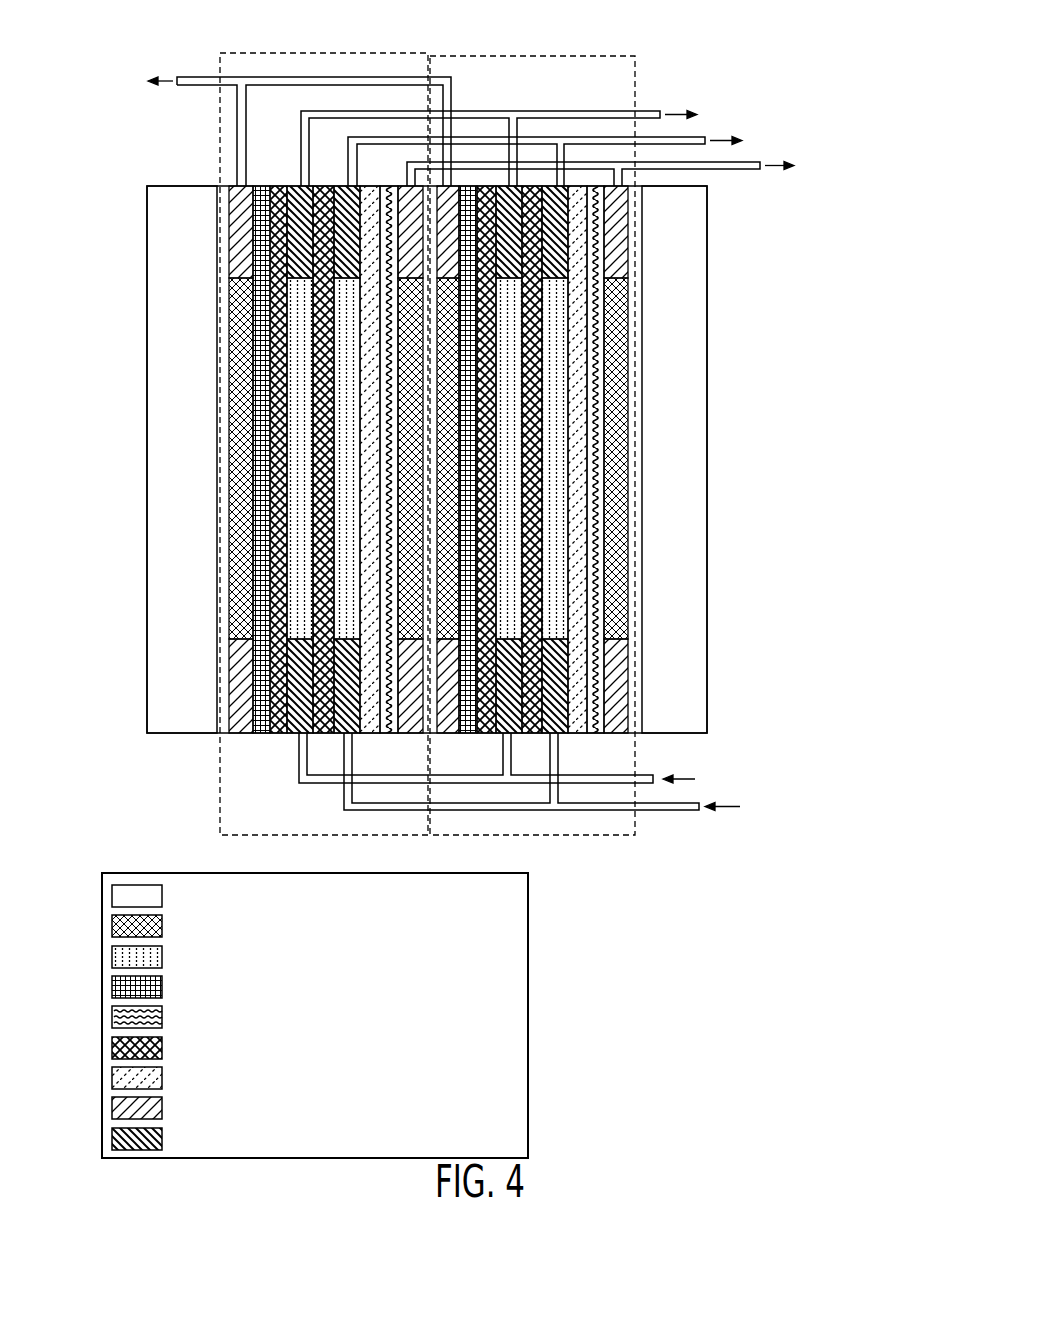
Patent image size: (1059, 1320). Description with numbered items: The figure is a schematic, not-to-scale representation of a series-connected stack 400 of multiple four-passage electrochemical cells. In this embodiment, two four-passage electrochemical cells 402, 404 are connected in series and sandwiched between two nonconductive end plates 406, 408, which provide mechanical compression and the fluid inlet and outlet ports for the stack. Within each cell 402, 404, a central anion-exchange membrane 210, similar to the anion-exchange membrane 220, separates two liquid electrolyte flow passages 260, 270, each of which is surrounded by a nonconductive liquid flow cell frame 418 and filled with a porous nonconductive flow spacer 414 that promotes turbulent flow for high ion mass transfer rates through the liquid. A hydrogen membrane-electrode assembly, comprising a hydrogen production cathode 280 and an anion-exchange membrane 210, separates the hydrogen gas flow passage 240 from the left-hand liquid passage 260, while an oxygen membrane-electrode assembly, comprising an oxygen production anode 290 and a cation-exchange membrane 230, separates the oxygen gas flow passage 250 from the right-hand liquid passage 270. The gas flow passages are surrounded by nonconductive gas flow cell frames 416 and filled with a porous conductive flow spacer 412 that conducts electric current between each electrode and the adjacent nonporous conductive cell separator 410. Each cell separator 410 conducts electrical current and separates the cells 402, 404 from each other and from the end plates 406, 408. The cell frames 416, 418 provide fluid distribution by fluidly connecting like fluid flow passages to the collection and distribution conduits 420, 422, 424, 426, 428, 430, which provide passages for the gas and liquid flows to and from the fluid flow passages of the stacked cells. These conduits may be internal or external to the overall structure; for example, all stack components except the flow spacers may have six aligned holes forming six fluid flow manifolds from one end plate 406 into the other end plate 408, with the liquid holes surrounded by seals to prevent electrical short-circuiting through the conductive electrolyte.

The electrochemical cell stack 400 is at (115, 177).
The four-passage electrochemical cell 402 is at (300, 836).
The four-passage electrochemical cell 404 is at (525, 836).
The end plate 406 is at (147, 450).
The end plate 408 is at (707, 460).
The nonporous conductive cell separator 410 is at (280, 896).
The porous conductive flow spacer 412 is at (370, 608).
The porous nonconductive flow spacer 414 is at (340, 623).
The gas flow cell frame 416 is at (370, 653).
The liquid flow cell frame 418 is at (340, 668).
The collection and distribution conduit 420 is at (276, 86).
The collection and distribution conduit 422 is at (478, 111).
The collection and distribution conduit 424 is at (568, 137).
The collection and distribution conduit 426 is at (731, 170).
The collection and distribution conduit 428 is at (643, 775).
The collection and distribution conduit 430 is at (665, 812).
The hydrogen production cathode 280 is at (294, 592).
The oxygen production anode 290 is at (358, 607).
The anion-exchange membrane 210 is at (304, 623).
The anion-exchange membrane 220 is at (382, 623).
The cation-exchange membrane 230 is at (349, 638).
The hydrogen gas flow passage 240 is at (110, 82).
The oxygen gas flow passage 250 is at (829, 167).
The left-hand liquid electrolyte flow passage 260 is at (715, 446).
The right-hand liquid electrolyte flow passage 270 is at (760, 474).